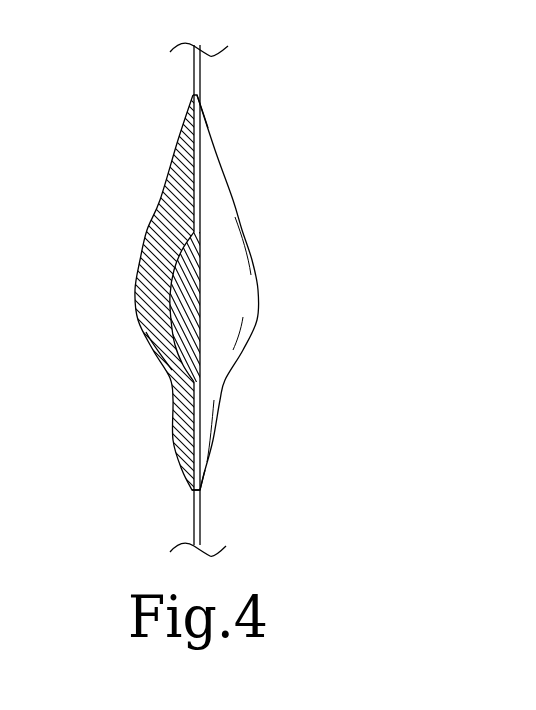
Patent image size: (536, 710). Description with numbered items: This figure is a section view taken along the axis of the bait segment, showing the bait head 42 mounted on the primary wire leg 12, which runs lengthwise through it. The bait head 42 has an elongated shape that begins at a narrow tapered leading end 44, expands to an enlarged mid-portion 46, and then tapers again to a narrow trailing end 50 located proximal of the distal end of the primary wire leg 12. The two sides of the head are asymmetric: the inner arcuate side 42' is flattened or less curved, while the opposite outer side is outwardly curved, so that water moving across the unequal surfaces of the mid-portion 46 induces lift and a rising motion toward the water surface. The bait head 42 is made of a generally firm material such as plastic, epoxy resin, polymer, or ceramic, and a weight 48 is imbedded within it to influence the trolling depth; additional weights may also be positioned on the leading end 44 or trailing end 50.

The primary wire leg 12 is at (193, 68).
The bait head 42 is at (268, 286).
The inner arcuate side 42' is at (268, 292).
The leading end 44 is at (205, 116).
The enlarged mid-portion 46 is at (235, 298).
The weight 48 is at (178, 312).
The trailing end 50 is at (222, 432).